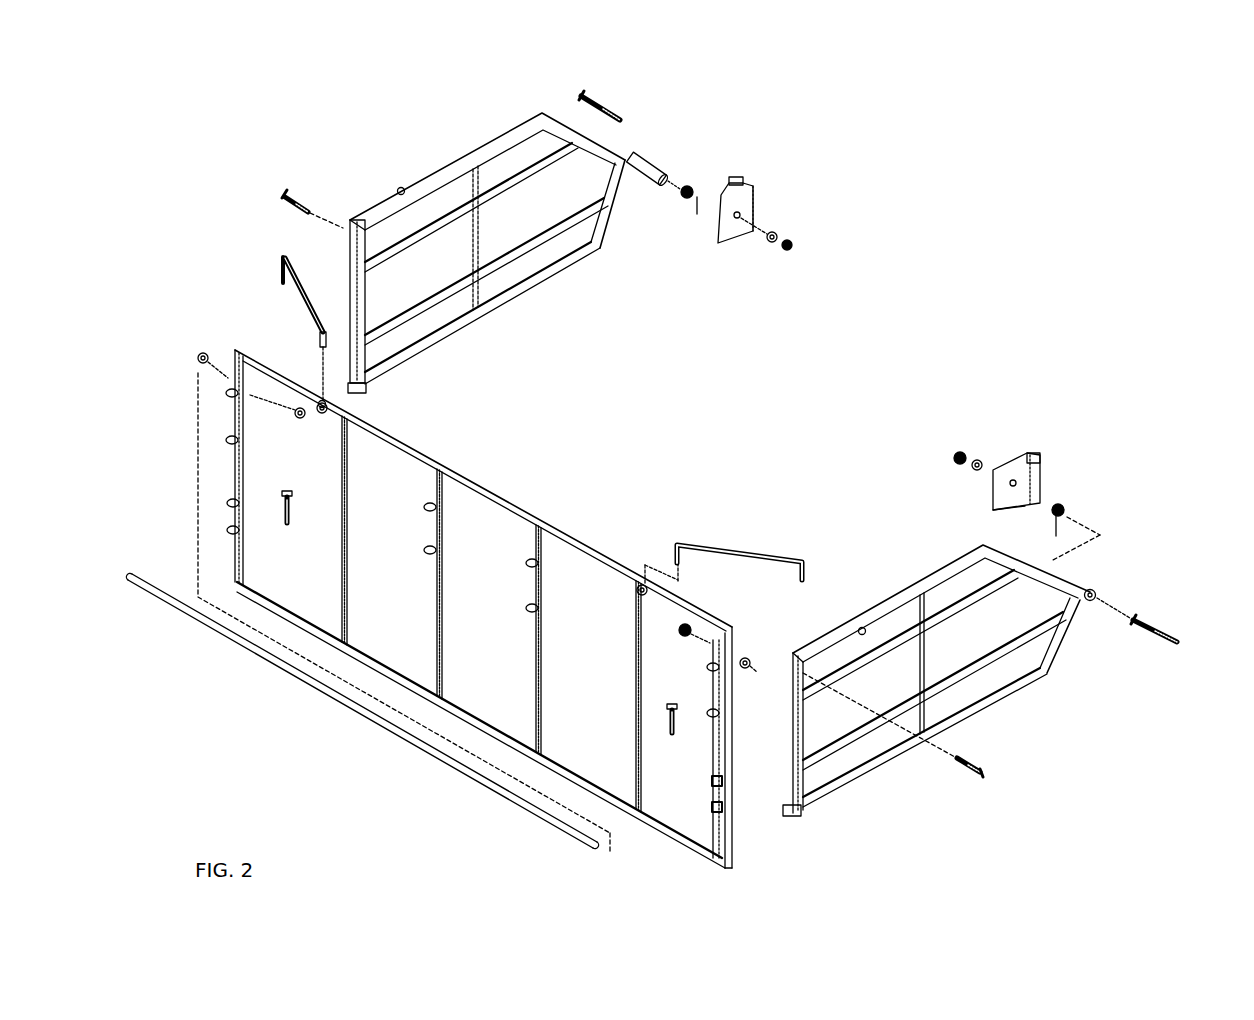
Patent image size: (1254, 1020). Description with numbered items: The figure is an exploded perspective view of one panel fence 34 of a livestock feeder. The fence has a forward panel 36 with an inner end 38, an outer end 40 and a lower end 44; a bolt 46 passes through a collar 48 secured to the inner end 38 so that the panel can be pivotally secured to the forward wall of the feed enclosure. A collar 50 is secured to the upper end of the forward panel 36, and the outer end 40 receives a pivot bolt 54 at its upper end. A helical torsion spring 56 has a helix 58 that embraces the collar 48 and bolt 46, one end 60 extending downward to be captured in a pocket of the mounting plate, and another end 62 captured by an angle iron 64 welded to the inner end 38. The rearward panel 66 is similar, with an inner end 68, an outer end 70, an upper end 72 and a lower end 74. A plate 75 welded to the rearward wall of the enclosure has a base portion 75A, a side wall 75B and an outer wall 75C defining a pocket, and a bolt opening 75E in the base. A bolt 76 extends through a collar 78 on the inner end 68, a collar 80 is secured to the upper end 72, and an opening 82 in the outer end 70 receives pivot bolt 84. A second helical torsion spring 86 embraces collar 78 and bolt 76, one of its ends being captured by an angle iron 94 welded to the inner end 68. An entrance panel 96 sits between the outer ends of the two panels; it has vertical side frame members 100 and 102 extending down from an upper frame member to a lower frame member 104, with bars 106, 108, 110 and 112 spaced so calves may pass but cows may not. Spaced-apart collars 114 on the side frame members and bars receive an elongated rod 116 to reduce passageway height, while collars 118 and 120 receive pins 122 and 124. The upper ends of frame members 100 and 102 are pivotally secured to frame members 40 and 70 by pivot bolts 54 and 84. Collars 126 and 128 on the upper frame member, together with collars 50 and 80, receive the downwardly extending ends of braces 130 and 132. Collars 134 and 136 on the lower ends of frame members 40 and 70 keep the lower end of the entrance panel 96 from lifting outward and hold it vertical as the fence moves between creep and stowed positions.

The first panel fence 34 is at (858, 298).
The forward panel 36 is at (946, 708).
The inner end 38 is at (1103, 585).
The outer end 40 is at (783, 778).
The lower end 44 is at (883, 763).
The bolt 46 is at (1163, 643).
The collar 48 is at (1097, 583).
The collar 50 is at (860, 628).
The pivot bolt 54 is at (982, 775).
The helical torsion spring 56 is at (1033, 455).
The helix 58 is at (1050, 512).
The end 60 is at (1053, 530).
The end 62 is at (1023, 506).
The angle iron 64 is at (1047, 600).
The rearward panel 66 is at (568, 231).
The inner end 68 is at (653, 160).
The outer end 70 is at (357, 305).
The upper end 72 is at (512, 140).
The lower end 74 is at (518, 288).
The plate 75 is at (806, 204).
The base portion 75A is at (747, 203).
The side wall 75B is at (748, 178).
The outer wall 75C is at (728, 180).
The bolt opening 75E is at (737, 222).
The bolt 76 is at (607, 104).
The collar 78 is at (638, 172).
The collar 80 is at (398, 190).
The opening 82 is at (347, 245).
The pivot bolt 84 is at (282, 196).
The helical torsion spring 86 is at (685, 217).
The angle iron 94 is at (620, 168).
The entrance panel 96 is at (444, 609).
The side frame member 100 is at (713, 743).
The side frame member 102 is at (240, 477).
The lower frame member 104 is at (538, 650).
The bar 106 is at (633, 733).
The bar 108 is at (533, 638).
The bar 110 is at (428, 637).
The bar 112 is at (338, 560).
The collars 114 is at (240, 441).
The elongated rod 116 is at (300, 680).
The collar 118 is at (713, 790).
The collar 120 is at (233, 503).
The pin 122 is at (680, 641).
The pin 124 is at (290, 503).
The collar 126 is at (642, 585).
The collar 128 is at (320, 403).
The brace 130 is at (712, 548).
The brace 132 is at (318, 320).
The collar 134 is at (787, 816).
The collar 136 is at (365, 390).